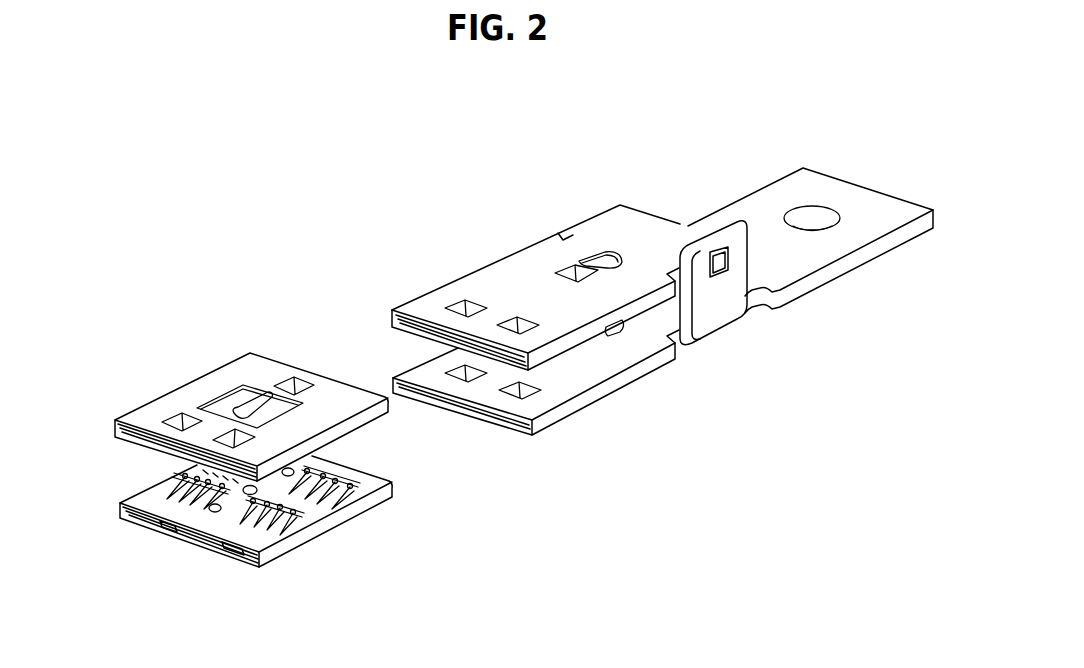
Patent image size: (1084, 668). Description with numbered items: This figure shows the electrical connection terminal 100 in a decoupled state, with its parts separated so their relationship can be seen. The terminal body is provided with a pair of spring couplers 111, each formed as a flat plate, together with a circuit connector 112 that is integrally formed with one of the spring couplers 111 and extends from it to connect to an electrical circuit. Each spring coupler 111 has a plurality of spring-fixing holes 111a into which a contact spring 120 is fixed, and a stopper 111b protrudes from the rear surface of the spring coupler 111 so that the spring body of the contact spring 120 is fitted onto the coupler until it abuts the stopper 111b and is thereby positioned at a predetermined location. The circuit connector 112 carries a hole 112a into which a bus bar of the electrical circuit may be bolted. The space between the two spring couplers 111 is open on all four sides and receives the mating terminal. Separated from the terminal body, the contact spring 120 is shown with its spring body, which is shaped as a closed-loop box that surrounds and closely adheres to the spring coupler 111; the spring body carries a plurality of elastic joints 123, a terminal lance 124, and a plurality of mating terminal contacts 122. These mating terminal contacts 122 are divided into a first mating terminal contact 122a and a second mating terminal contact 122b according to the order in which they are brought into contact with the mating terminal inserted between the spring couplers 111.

The electrical connection terminal 100 is at (581, 188).
The spring coupler 111 is at (420, 297).
The spring-fixing hole 111a is at (522, 324).
The stopper 111b is at (611, 253).
The circuit connector 112 is at (777, 178).
The hole 112a is at (822, 215).
The contact spring 120 is at (132, 395).
The mating terminal contact 122 is at (287, 526).
The first mating terminal contact 122a is at (243, 507).
The second mating terminal contact 122b is at (354, 492).
The elastic joint 123 is at (180, 412).
The terminal lance 124 is at (236, 402).